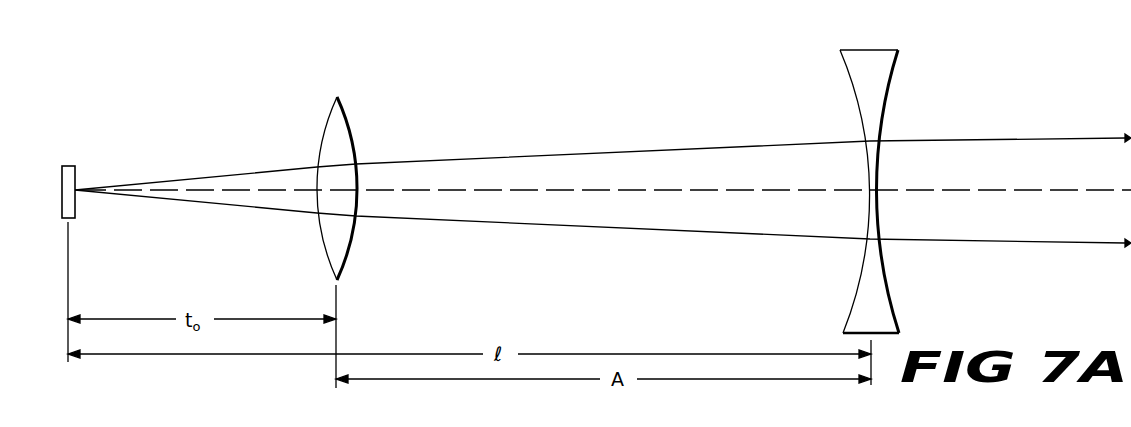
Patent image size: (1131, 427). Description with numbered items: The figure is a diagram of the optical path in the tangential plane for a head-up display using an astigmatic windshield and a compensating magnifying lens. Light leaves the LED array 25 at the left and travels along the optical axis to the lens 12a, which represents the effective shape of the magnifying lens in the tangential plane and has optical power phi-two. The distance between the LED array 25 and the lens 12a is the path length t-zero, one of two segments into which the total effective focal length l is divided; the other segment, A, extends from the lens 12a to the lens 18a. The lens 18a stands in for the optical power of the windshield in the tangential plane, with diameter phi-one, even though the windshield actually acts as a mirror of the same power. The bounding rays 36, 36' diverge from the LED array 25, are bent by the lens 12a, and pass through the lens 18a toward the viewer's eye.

The LED array 25 is at (70, 173).
The lens in the tangential plane 12a is at (345, 141).
The lens representing windshield optical power in the tangential plane 18a is at (886, 82).
The light ray 36 is at (603, 159).
The light ray 36' is at (603, 226).